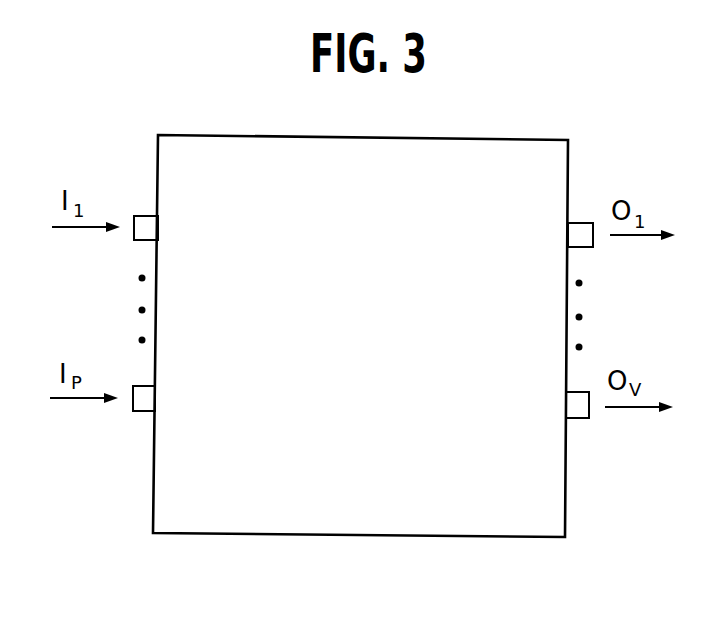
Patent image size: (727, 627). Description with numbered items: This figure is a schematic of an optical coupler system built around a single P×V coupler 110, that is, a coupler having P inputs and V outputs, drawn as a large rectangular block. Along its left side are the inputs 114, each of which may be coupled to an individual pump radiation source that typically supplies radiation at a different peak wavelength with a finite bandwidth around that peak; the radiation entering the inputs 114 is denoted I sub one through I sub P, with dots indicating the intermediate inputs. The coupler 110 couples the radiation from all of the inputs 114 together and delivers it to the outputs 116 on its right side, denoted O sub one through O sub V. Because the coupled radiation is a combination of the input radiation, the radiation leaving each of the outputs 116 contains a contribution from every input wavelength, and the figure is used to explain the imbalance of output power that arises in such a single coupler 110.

The P×V coupler 110 is at (498, 540).
The inputs 114 is at (145, 216).
The outputs 116 is at (582, 223).